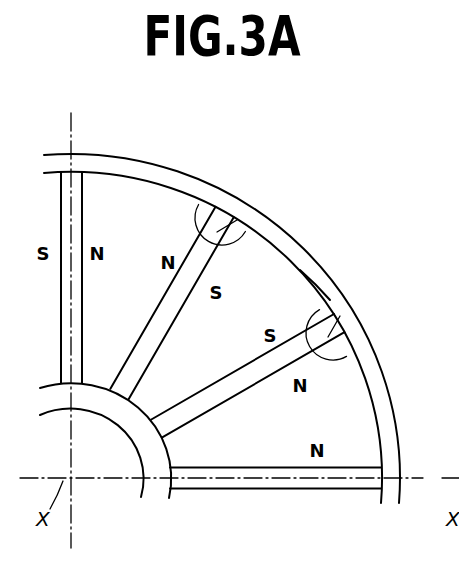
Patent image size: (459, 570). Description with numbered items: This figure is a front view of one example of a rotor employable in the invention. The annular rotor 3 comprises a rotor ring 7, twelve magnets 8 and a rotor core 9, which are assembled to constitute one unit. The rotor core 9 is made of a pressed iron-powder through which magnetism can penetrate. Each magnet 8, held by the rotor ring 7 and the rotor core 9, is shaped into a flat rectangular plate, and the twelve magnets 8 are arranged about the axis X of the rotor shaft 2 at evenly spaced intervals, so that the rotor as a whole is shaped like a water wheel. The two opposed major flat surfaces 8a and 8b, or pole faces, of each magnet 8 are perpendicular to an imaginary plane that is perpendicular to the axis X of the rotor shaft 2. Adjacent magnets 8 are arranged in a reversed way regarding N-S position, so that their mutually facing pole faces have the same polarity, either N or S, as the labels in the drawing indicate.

The rotor shaft 2 is at (113, 460).
The annular rotor 3 is at (322, 209).
The rotor ring 7 is at (350, 304).
The magnet 8 is at (229, 220).
The major flat surface 8a is at (200, 205).
The major flat surface 8b is at (240, 226).
The rotor core 9 is at (286, 282).